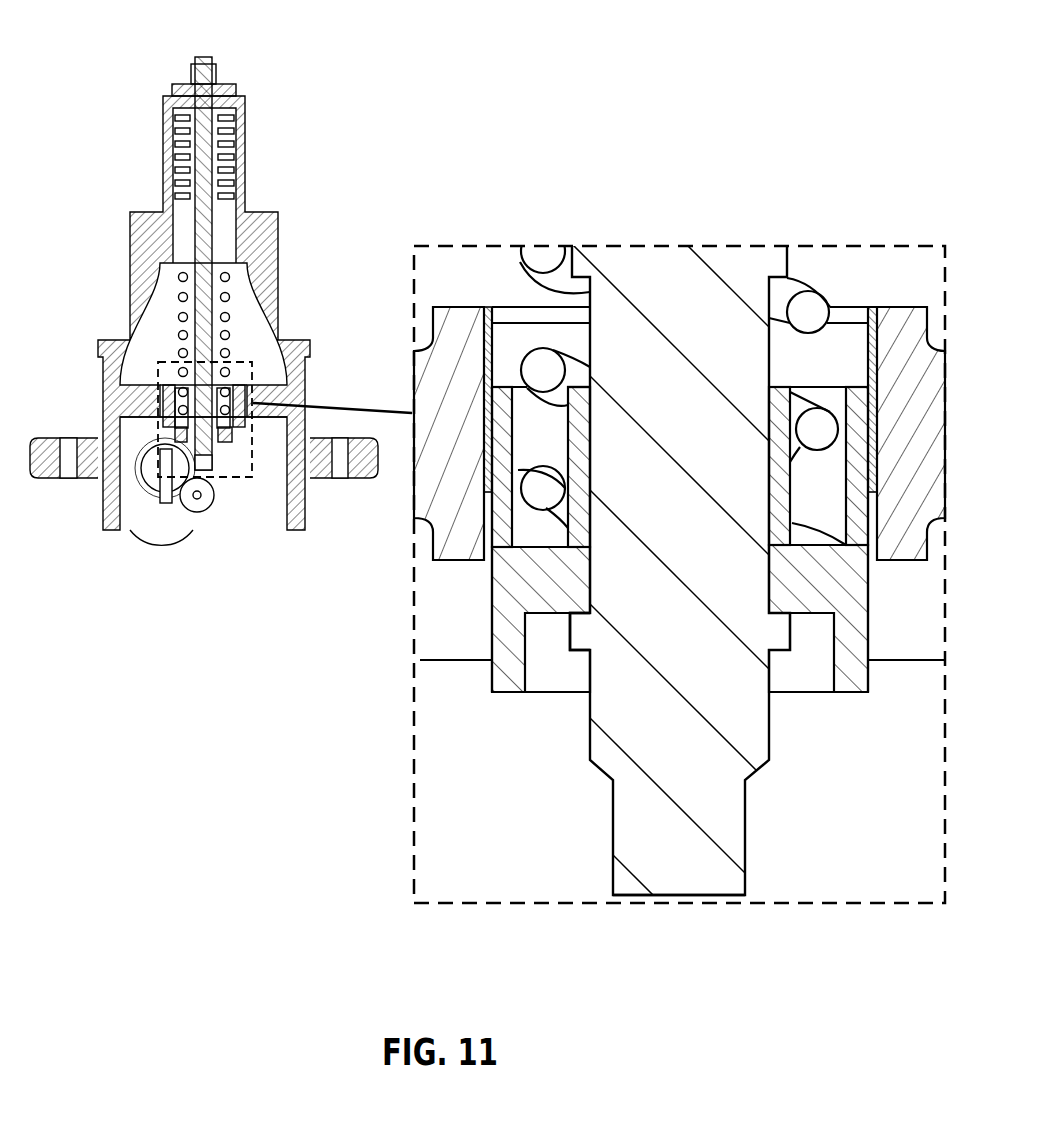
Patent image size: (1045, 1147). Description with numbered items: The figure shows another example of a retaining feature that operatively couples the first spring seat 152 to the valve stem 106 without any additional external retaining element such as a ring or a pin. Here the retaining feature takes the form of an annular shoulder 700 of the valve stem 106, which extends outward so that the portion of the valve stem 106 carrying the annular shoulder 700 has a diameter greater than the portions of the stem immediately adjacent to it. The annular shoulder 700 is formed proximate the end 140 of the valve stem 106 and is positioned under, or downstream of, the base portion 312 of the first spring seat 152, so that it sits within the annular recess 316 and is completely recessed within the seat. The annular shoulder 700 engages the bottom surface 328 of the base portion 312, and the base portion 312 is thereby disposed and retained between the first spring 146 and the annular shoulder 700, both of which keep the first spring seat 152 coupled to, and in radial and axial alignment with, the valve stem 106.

The valve stem 106 is at (670, 307).
The end 140 is at (663, 892).
The first spring 146 is at (812, 307).
The first spring seat 152 is at (445, 585).
The base portion 312 is at (533, 592).
The annular recess 316 is at (538, 677).
The bottom surface 328 is at (553, 617).
The annular shoulder 700 is at (587, 653).